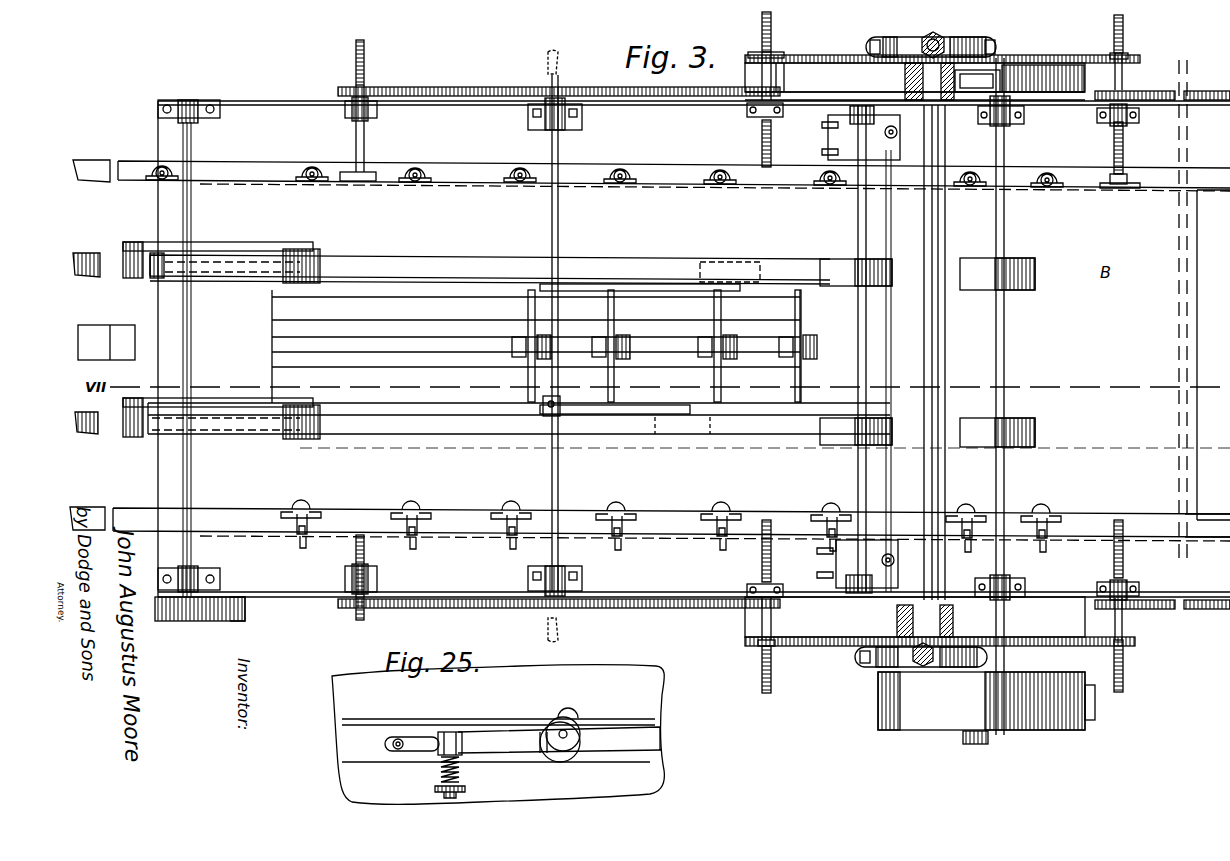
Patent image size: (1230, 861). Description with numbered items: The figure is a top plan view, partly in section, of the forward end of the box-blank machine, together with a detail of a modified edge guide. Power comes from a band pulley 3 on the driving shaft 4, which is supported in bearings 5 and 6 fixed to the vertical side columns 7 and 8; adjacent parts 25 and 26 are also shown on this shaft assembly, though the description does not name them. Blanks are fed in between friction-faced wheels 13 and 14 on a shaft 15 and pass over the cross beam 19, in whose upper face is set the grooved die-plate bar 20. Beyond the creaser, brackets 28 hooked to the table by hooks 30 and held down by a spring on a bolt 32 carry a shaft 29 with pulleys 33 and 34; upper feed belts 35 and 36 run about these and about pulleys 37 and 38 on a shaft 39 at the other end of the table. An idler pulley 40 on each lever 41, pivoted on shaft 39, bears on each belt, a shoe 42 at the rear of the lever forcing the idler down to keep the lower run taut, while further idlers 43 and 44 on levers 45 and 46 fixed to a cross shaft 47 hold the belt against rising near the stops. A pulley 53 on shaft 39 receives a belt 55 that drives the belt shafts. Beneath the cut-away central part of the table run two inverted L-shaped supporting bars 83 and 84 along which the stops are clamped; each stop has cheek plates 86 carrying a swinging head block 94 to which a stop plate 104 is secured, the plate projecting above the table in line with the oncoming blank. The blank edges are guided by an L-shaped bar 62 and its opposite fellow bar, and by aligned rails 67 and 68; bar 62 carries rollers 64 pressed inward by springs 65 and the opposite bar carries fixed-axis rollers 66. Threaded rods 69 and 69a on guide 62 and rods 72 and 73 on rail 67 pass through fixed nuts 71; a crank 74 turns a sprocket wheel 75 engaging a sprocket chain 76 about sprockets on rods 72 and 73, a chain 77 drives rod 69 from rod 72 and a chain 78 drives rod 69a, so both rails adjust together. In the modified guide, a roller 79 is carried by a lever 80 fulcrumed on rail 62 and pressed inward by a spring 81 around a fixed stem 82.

In FIG. 3, the band pulley 3 is at (986, 701).
In FIG. 3, the driving shaft 4 is at (980, 118).
In FIG. 3, the bearing 5 is at (1024, 592).
In FIG. 3, the bearing 6 is at (985, 82).
In FIG. 3, the side frame or column 7 is at (915, 617).
In FIG. 3, the side frame or column 8 is at (915, 81).
In FIG. 3, the pulley or wheel 13 is at (1036, 440).
In FIG. 3, the pulley or wheel 14 is at (1036, 285).
In FIG. 3, the shaft 15 is at (1006, 397).
In FIG. 3, the cross beam 19 is at (914, 352).
In FIG. 3, the bar (die plate) 20 is at (934, 356).
In FIG. 3, the nut 25 is at (940, 38).
In FIG. 3, the bearing block 26 is at (898, 38).
In FIG. 3, the bracket 28 is at (855, 110).
In FIG. 3, the shaft 29 is at (856, 204).
In FIG. 3, the hook 30 is at (822, 151).
In FIG. 3, the bolt 32 is at (896, 138).
In FIG. 3, the pulley 33 is at (830, 445).
In FIG. 3, the pulley 34 is at (832, 259).
In FIG. 3, the belt 35 is at (612, 425).
In FIG. 3, the belt 36 is at (636, 268).
In FIG. 3, the pulley 37 is at (240, 428).
In FIG. 3, the pulley 38 is at (222, 278).
In FIG. 3, the shaft 39 is at (192, 355).
In FIG. 3, the idler pulley 40 is at (322, 266).
In FIG. 3, the lever 41 is at (222, 243).
In FIG. 3, the shoe 42 is at (135, 270).
In FIG. 3, the idler 43 is at (695, 437).
In FIG. 3, the idler 44 is at (744, 268).
In FIG. 3, the lever 45 is at (632, 408).
In FIG. 3, the lever 46 is at (648, 291).
In FIG. 3, the cross shaft 47 is at (560, 246).
In FIG. 3, the pulley 53 is at (195, 620).
In FIG. 3, the belt 55 is at (236, 620).
In FIG. 3, the bar (guide rail) 62 is at (1150, 512).
In FIG. 25, the bar (guide rail) 62 is at (382, 729).
In FIG. 3, the roller 64 is at (618, 510).
In FIG. 3, the spring 65 is at (418, 541).
In FIG. 3, the roller 66 is at (315, 182).
In FIG. 3, the guide bar or rail 67 is at (248, 515).
In FIG. 3, the guide bar or rail 68 is at (683, 182).
In FIG. 3, the threaded rod 69 is at (1123, 140).
In FIG. 3, the threaded rod 69a is at (1214, 344).
In FIG. 3, the fixed nut 71 is at (1100, 116).
In FIG. 3, the threaded rod 72 is at (762, 30).
In FIG. 3, the threaded rod 73 is at (364, 58).
In FIG. 3, the crank 74 is at (548, 640).
In FIG. 3, the sprocket wheel 75 is at (560, 95).
In FIG. 3, the sprocket chain 76 is at (486, 96).
In FIG. 3, the chain 77 is at (806, 55).
In FIG. 3, the chain 78 is at (1150, 91).
In FIG. 25, the roller 79 is at (572, 718).
In FIG. 25, the lever 80 is at (490, 736).
In FIG. 25, the spring 81 is at (460, 770).
In FIG. 25, the fixed stem 82 is at (438, 770).
In FIG. 3, the supporting bar 83 is at (446, 360).
In FIG. 3, the supporting bar 84 is at (458, 330).
In FIG. 3, the cheek plate 86 is at (512, 350).
In FIG. 3, the head block or casing 94 is at (550, 340).
In FIG. 3, the stop plate 104 is at (528, 312).